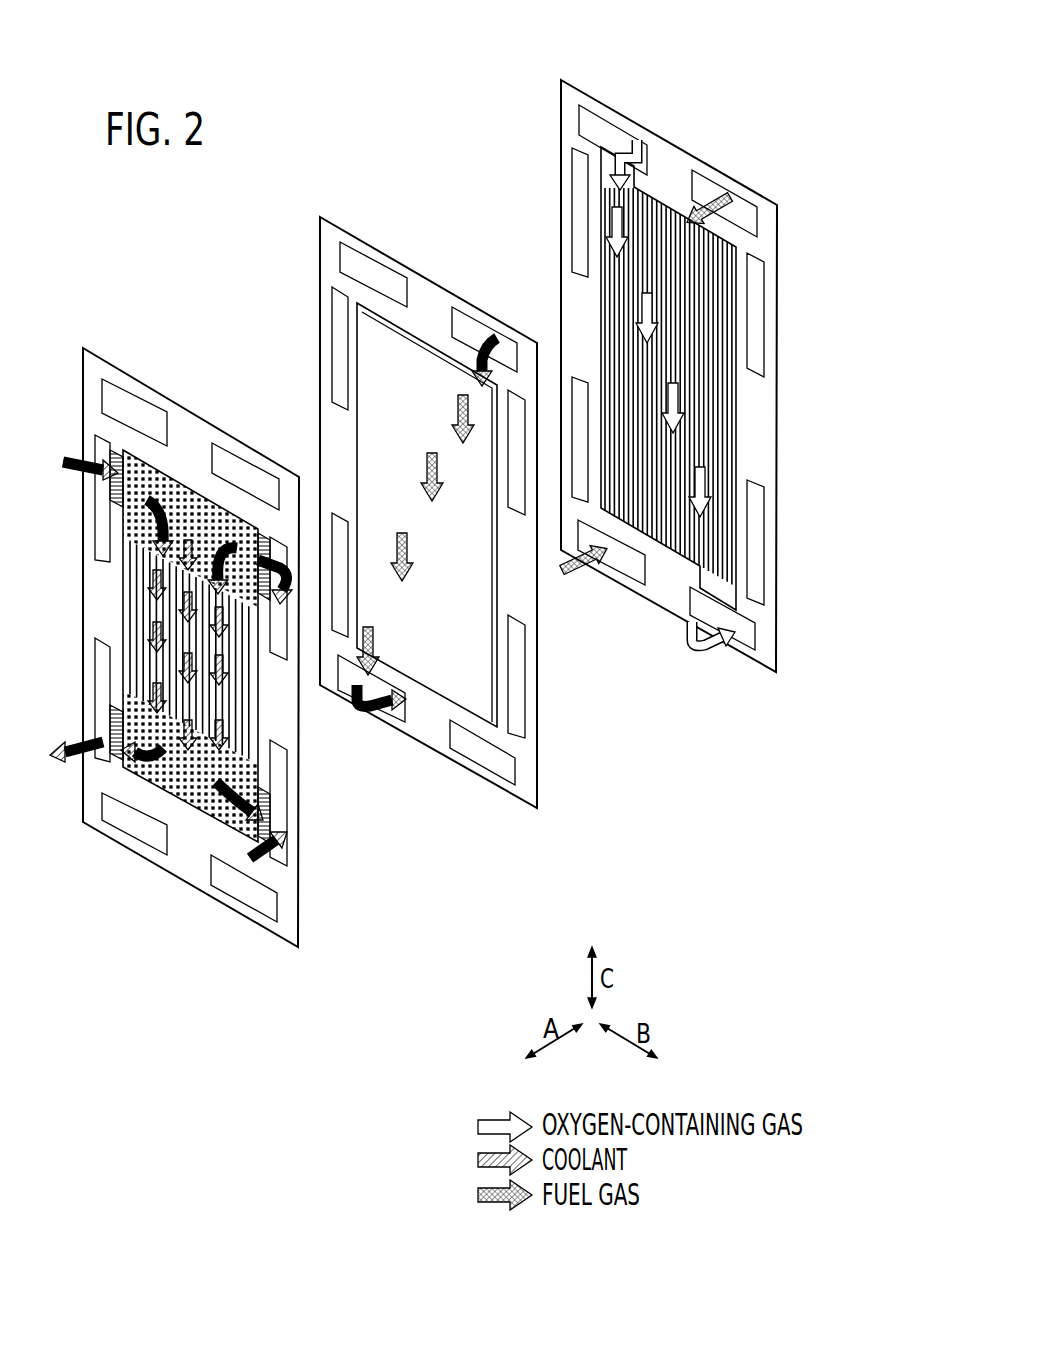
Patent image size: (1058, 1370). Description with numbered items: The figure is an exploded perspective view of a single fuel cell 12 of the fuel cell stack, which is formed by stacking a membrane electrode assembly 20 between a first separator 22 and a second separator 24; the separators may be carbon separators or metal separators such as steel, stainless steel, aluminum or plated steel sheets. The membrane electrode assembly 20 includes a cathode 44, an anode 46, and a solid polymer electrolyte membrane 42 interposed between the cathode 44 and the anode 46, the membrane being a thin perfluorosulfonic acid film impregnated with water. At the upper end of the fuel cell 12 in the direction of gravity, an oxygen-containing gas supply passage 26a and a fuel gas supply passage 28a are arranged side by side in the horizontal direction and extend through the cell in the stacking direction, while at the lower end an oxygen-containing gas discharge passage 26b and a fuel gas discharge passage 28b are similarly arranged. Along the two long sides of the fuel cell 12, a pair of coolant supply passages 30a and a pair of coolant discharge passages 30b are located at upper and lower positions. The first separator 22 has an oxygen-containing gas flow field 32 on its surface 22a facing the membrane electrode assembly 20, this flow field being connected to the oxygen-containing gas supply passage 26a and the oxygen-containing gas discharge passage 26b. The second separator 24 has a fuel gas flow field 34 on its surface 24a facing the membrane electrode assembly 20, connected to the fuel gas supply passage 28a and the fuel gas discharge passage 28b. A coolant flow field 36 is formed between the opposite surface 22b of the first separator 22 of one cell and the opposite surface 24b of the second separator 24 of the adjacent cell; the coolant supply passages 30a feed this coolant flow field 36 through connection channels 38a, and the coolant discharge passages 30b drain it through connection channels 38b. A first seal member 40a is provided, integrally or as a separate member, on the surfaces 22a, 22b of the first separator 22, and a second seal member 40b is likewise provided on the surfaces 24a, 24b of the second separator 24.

The fuel cell 12 is at (152, 241).
The membrane electrode assembly 20 is at (404, 486).
The first separator 22 is at (560, 78).
The surface of the first separator 22a is at (732, 646).
The surface of the first separator 22b is at (770, 655).
The second separator 24 is at (82, 346).
The surface of the second separator 24a is at (264, 920).
The surface of the second separator 24b is at (237, 905).
The oxygen-containing gas supply passage 26a is at (140, 412).
The oxygen-containing gas discharge passage 26b is at (230, 873).
The fuel gas supply passage 28a is at (220, 467).
The fuel gas discharge passage 28b is at (132, 818).
The coolant supply passage 30a is at (100, 530).
The coolant discharge passage 30b is at (100, 658).
The oxygen-containing gas flow field 32 is at (628, 281).
The fuel gas flow field 34 is at (150, 578).
The coolant flow field 36 is at (176, 770).
The connection channel 38a is at (118, 452).
The connection channel 38b is at (118, 710).
The first seal member 40a is at (617, 584).
The second seal member 40b is at (299, 902).
The solid polymer electrolyte membrane 42 is at (320, 318).
The cathode 44 is at (390, 392).
The anode 46 is at (390, 360).